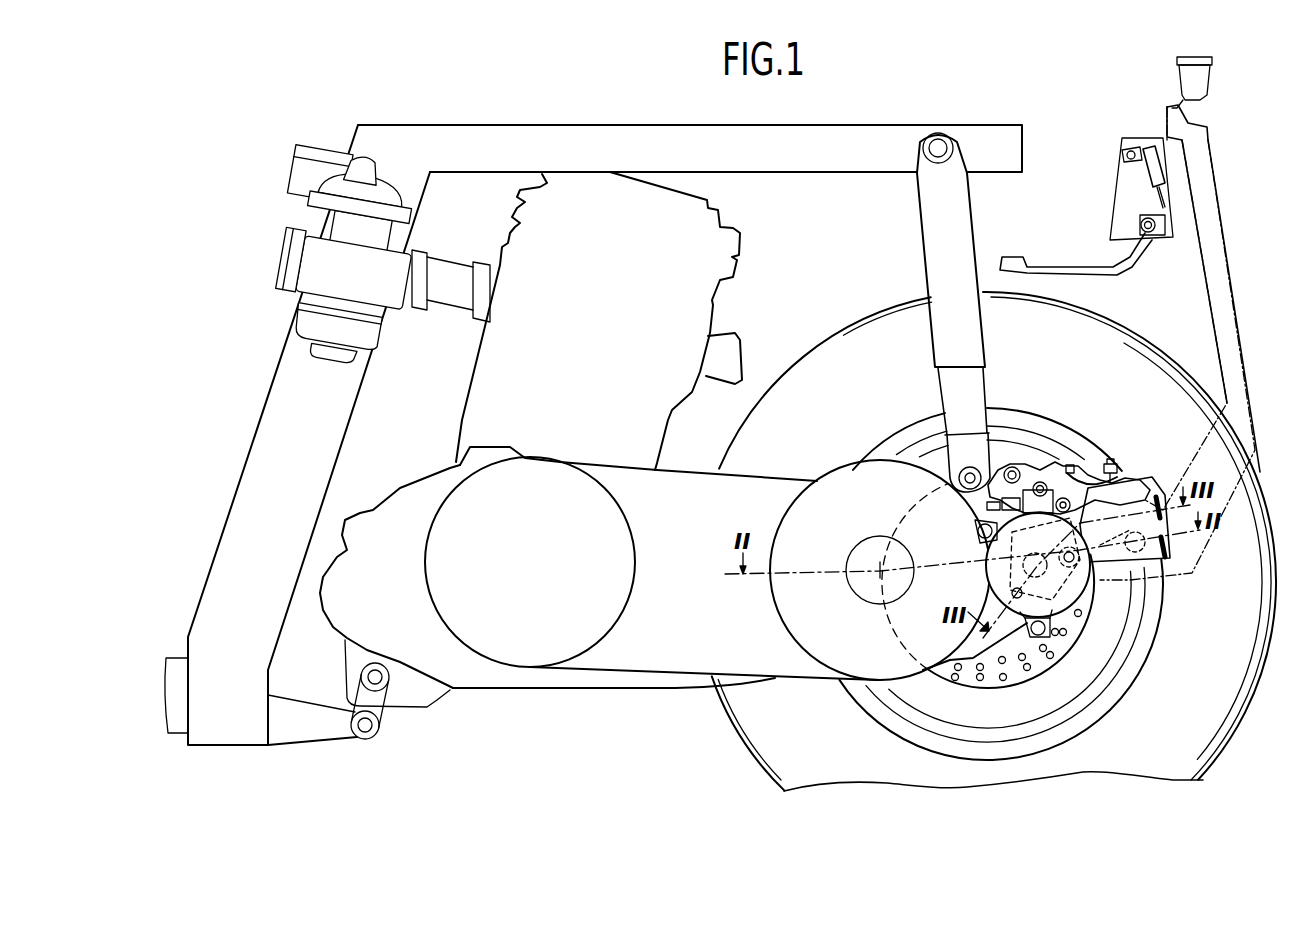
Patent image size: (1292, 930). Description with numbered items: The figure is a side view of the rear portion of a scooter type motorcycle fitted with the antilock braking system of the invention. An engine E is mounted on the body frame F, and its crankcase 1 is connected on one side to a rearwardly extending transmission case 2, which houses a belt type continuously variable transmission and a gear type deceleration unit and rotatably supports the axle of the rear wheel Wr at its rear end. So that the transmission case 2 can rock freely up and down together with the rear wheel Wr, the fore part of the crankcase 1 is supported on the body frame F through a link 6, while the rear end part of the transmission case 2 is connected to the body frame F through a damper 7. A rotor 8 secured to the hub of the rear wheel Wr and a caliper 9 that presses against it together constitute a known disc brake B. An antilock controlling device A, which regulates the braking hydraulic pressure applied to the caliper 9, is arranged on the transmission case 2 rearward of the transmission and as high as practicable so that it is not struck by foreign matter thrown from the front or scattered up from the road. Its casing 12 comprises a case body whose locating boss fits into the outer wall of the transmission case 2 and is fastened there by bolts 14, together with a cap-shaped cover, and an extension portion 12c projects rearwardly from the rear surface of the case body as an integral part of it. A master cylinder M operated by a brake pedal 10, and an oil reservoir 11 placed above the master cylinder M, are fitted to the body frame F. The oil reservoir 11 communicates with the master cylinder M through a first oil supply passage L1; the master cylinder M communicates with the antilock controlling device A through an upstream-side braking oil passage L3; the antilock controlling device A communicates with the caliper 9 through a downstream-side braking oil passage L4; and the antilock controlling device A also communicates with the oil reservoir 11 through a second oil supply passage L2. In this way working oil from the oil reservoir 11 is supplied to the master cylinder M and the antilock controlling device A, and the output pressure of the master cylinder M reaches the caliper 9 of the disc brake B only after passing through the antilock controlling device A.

The crankcase 1 is at (494, 688).
The transmission case 2 is at (653, 668).
The link 6 is at (380, 709).
The damper 7 is at (952, 282).
The rotor 8 is at (1022, 673).
The caliper 9 is at (1052, 470).
The brake pedal 10 is at (1010, 256).
The oil reservoir 11 is at (1207, 83).
The casing 12 is at (1077, 598).
The extension portion 12c is at (1145, 502).
The bolts 14 is at (978, 533).
The antilock controlling device A is at (1073, 576).
The disc brake B is at (1026, 456).
The engine E is at (604, 343).
The body frame F is at (523, 128).
The master cylinder M is at (1145, 168).
The rear wheel Wr is at (825, 355).
The first oil supply passage L1 is at (1163, 107).
The second oil supply passage L2 is at (1240, 300).
The upstream-side braking oil passage L3 is at (1205, 291).
The downstream-side braking oil passage L4 is at (1088, 470).